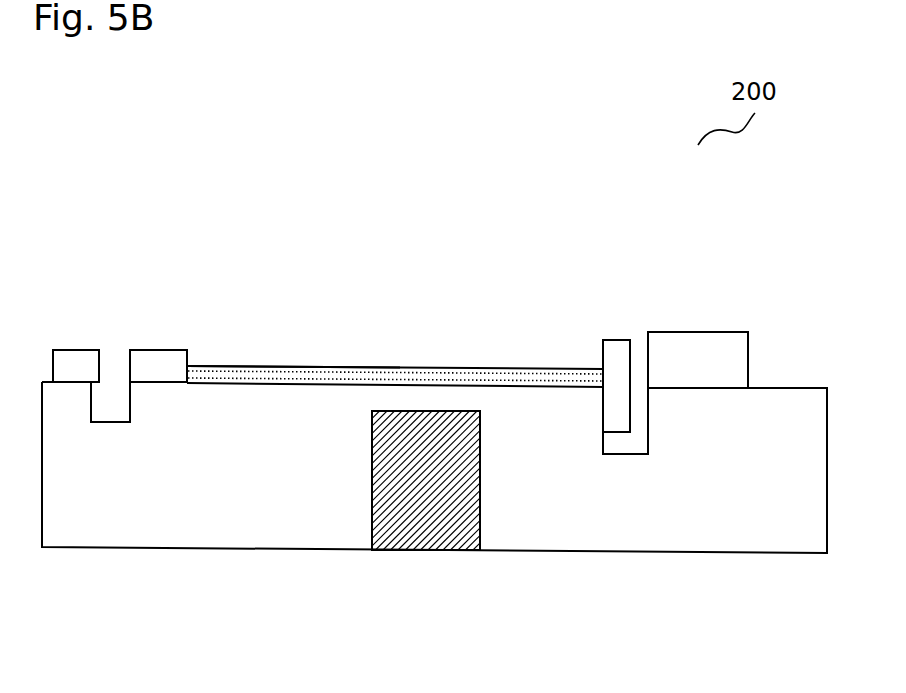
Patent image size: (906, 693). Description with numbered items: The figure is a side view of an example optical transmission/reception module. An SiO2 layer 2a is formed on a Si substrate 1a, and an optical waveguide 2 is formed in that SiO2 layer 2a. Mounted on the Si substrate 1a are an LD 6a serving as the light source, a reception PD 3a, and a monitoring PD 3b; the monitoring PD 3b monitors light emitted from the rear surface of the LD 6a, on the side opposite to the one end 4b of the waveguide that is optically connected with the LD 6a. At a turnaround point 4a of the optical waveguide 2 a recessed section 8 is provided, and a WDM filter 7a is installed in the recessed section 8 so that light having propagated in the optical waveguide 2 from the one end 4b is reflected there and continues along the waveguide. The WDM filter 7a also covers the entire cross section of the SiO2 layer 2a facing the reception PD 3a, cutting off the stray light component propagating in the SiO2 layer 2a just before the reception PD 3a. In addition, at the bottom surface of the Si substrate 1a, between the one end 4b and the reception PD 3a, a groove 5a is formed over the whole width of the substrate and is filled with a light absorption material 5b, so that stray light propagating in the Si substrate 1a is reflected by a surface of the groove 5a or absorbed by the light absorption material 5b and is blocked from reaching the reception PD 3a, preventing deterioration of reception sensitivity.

The Si substrate 1a is at (628, 552).
The optical waveguide 2 is at (500, 367).
The SiO2 layer 2a is at (309, 366).
The reception PD 3a is at (698, 332).
The monitoring PD 3b is at (77, 350).
The turnaround point 4a is at (600, 372).
The one end 4b is at (190, 364).
The groove 5a is at (427, 411).
The light absorption material 5b is at (420, 527).
The LD 6a is at (157, 350).
The WDM filter 7a is at (615, 340).
The recessed section 8 is at (625, 453).